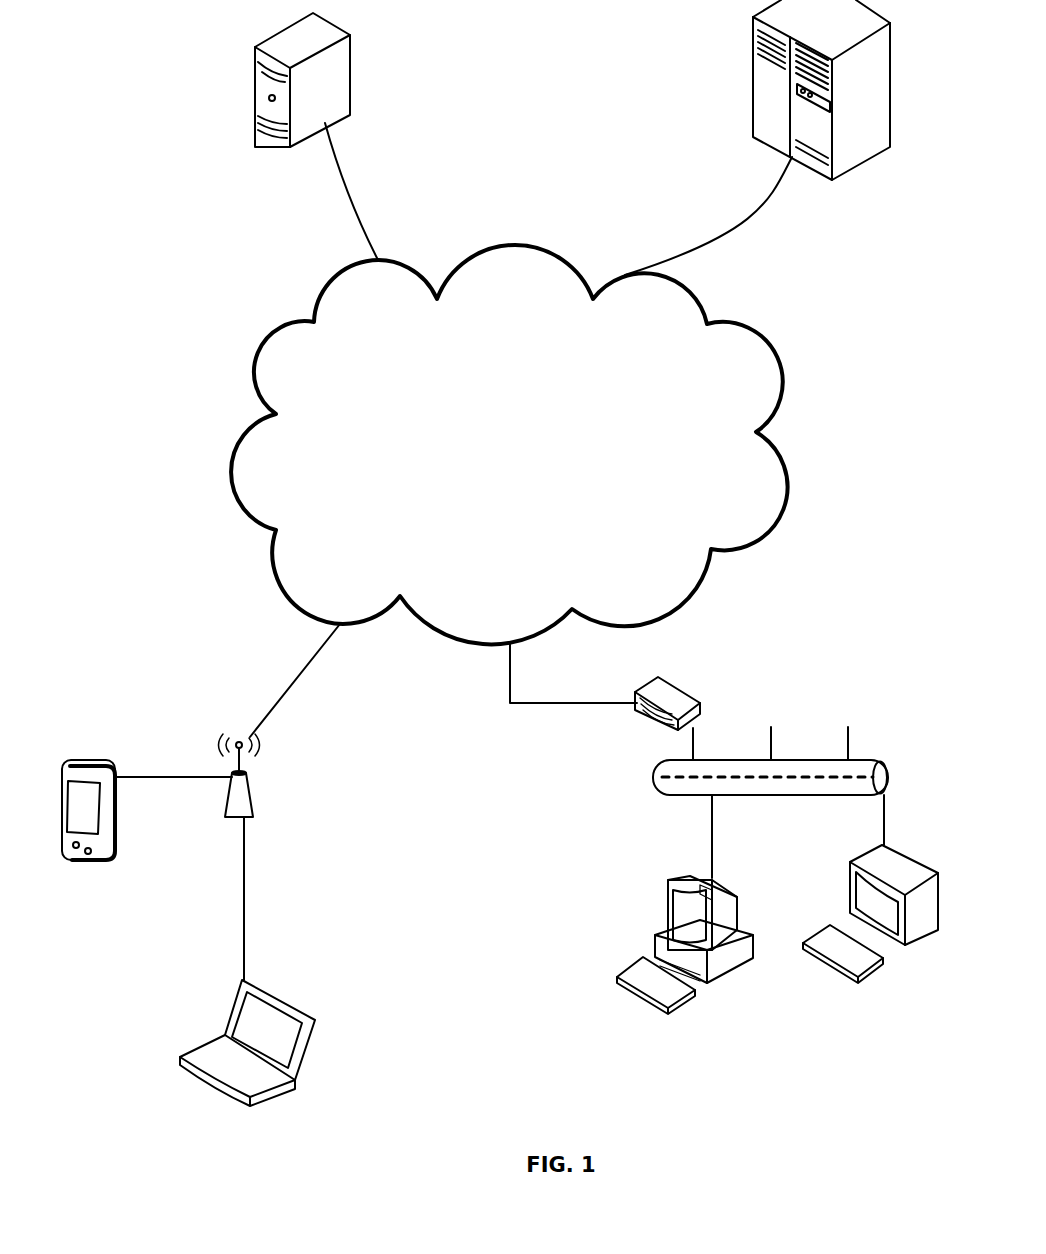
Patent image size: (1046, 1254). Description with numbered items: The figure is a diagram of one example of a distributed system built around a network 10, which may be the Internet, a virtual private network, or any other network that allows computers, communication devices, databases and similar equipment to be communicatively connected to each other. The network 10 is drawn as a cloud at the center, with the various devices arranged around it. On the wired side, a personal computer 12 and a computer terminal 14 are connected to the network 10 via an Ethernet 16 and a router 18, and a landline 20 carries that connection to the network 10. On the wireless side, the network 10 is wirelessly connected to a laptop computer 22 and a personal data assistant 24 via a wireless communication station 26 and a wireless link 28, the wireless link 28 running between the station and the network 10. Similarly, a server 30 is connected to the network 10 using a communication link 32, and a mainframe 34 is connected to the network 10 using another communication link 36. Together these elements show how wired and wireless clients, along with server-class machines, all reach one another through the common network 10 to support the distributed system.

The network 10 is at (185, 326).
The personal computer 12 is at (662, 927).
The computer terminal 14 is at (923, 863).
The Ethernet 16 is at (880, 760).
The router 18 is at (702, 702).
The landline 20 is at (552, 704).
The laptop computer 22 is at (268, 1097).
The personal data assistant 24 is at (92, 760).
The wireless communication station 26 is at (255, 810).
The wireless link 28 is at (285, 691).
The server 30 is at (350, 80).
The communication link 32 is at (365, 236).
The mainframe 34 is at (845, 182).
The communication link 36 is at (757, 217).